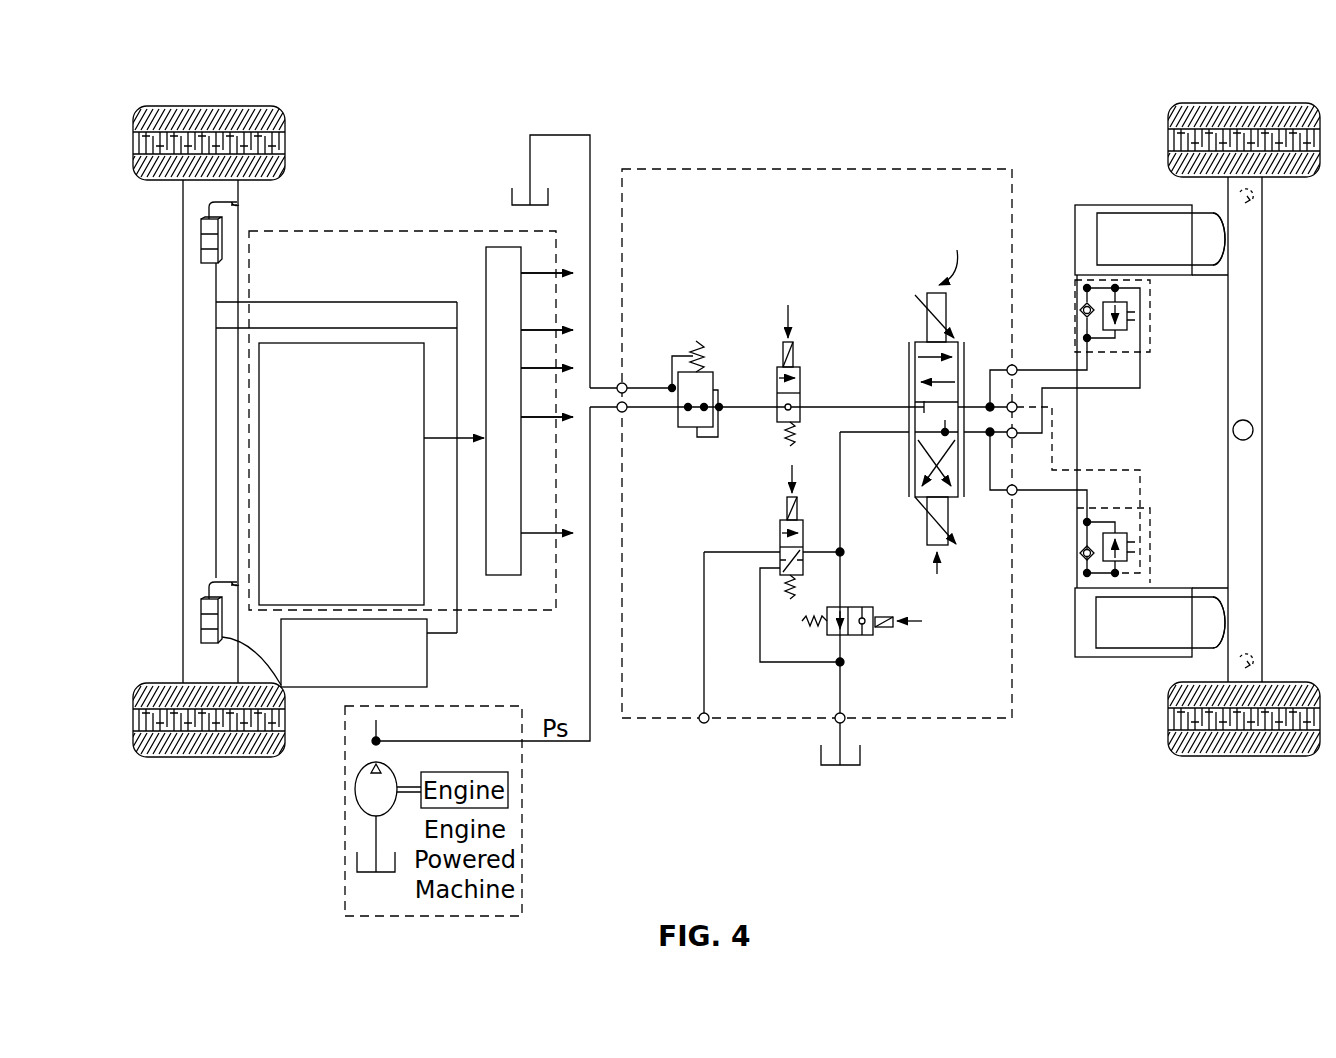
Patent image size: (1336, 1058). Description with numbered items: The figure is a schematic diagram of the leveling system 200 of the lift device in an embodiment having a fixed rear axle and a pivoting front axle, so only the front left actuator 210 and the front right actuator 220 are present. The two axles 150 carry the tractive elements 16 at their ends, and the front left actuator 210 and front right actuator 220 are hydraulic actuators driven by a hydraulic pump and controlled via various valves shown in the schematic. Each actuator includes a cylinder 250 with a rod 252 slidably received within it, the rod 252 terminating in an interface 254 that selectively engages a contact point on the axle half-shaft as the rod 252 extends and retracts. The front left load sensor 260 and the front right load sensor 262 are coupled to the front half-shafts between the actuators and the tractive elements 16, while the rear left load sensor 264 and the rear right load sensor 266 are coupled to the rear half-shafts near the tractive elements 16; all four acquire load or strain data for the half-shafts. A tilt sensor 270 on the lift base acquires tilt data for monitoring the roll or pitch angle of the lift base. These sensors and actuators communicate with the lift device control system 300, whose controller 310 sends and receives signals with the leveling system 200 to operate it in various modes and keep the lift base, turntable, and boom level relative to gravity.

The tractive element 16 is at (200, 116).
The axle 150 is at (182, 362).
The leveling system 200 is at (1033, 126).
The front left actuator 210 is at (1139, 419).
The front right actuator 220 is at (1099, 669).
The cylinder 250 is at (1085, 237).
The rod 252 is at (1112, 225).
The interface 254 is at (1225, 236).
The front left load sensor 260 is at (1254, 198).
The front right load sensor 262 is at (1254, 663).
The rear left load sensor 264 is at (222, 240).
The rear right load sensor 266 is at (283, 715).
The tilt sensor 270 is at (419, 657).
The lift device control system 300 is at (411, 390).
The controller 310 is at (497, 255).